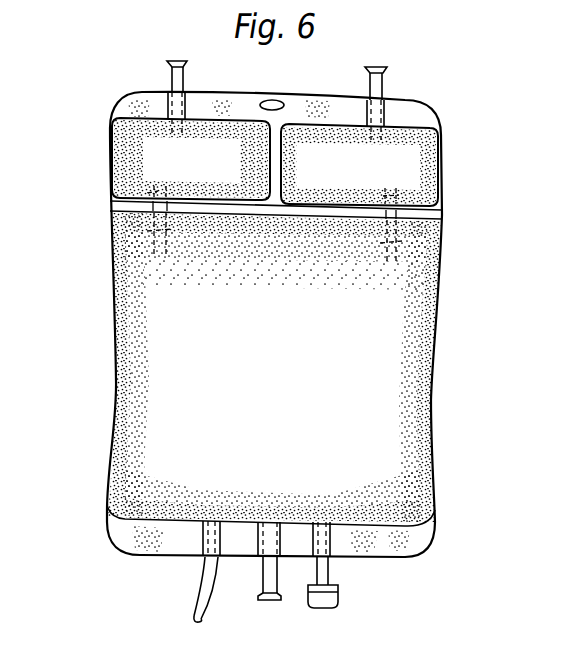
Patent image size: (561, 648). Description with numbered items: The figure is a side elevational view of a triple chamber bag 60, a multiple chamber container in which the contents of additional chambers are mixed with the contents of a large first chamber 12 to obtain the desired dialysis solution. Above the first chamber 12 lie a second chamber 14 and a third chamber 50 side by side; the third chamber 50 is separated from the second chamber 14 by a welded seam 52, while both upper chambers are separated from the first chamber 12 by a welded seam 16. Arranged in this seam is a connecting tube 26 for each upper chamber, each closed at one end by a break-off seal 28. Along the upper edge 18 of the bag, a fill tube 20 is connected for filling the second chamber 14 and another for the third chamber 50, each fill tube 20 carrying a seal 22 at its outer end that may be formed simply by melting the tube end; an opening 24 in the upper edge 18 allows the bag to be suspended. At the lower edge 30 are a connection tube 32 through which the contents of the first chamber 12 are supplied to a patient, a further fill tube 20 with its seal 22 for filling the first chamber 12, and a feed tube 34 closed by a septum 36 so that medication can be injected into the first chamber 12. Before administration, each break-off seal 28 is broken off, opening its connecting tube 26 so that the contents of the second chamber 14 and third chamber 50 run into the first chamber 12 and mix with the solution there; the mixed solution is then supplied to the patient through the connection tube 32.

The triple chamber bag 60 is at (105, 90).
The first chamber 12 is at (132, 355).
The second chamber 14 is at (148, 163).
The third chamber 50 is at (400, 165).
The welded seam 52 is at (278, 118).
The welded seam 16 is at (430, 216).
The upper edge 18 is at (124, 110).
The opening 24 is at (281, 103).
The seal 22 is at (167, 64).
The fill tube 20 is at (185, 82).
The connecting tube 26 is at (112, 193).
The break-off seal 28 is at (125, 241).
The lower edge 30 is at (128, 530).
The connection tube 32 is at (193, 616).
The feed tube 34 is at (323, 573).
The septum 36 is at (328, 598).